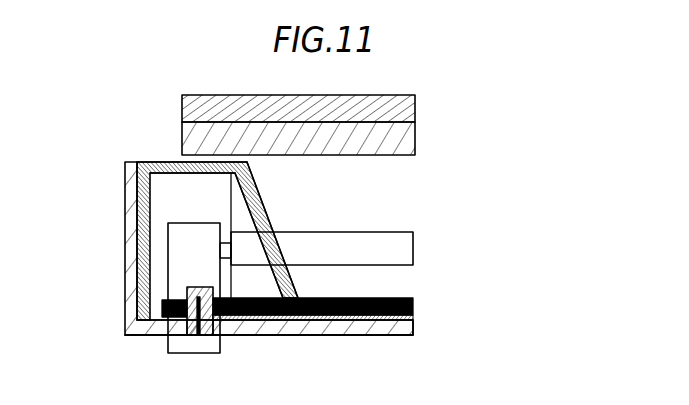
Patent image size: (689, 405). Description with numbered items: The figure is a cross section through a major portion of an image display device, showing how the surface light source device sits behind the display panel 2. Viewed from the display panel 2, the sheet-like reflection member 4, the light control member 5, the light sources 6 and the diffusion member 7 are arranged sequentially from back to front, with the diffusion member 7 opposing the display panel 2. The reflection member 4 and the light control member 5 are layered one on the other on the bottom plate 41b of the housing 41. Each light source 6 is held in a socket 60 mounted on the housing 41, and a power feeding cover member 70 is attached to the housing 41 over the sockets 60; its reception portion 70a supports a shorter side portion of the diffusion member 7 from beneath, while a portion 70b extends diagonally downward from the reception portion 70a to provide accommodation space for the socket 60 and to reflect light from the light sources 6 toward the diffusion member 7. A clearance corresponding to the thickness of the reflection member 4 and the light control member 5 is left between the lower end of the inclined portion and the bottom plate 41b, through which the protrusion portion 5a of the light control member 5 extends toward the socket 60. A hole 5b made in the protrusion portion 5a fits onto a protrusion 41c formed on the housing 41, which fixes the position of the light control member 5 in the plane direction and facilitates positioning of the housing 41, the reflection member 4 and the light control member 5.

The display panel 2 is at (412, 110).
The diffusion member 7 is at (412, 138).
The reflection member 4 is at (398, 330).
The light control member 5 is at (405, 297).
The protrusion portion 5a is at (228, 320).
The hole 5b is at (180, 323).
The light source 6 is at (393, 238).
The housing 41 is at (123, 263).
The bottom plate 41b is at (320, 333).
The protrusion 41c is at (187, 289).
The socket 60 is at (197, 232).
The power feeding cover member 70 is at (152, 162).
The reception portion 70a is at (175, 162).
The inclined portion of shielding member 70b is at (275, 222).